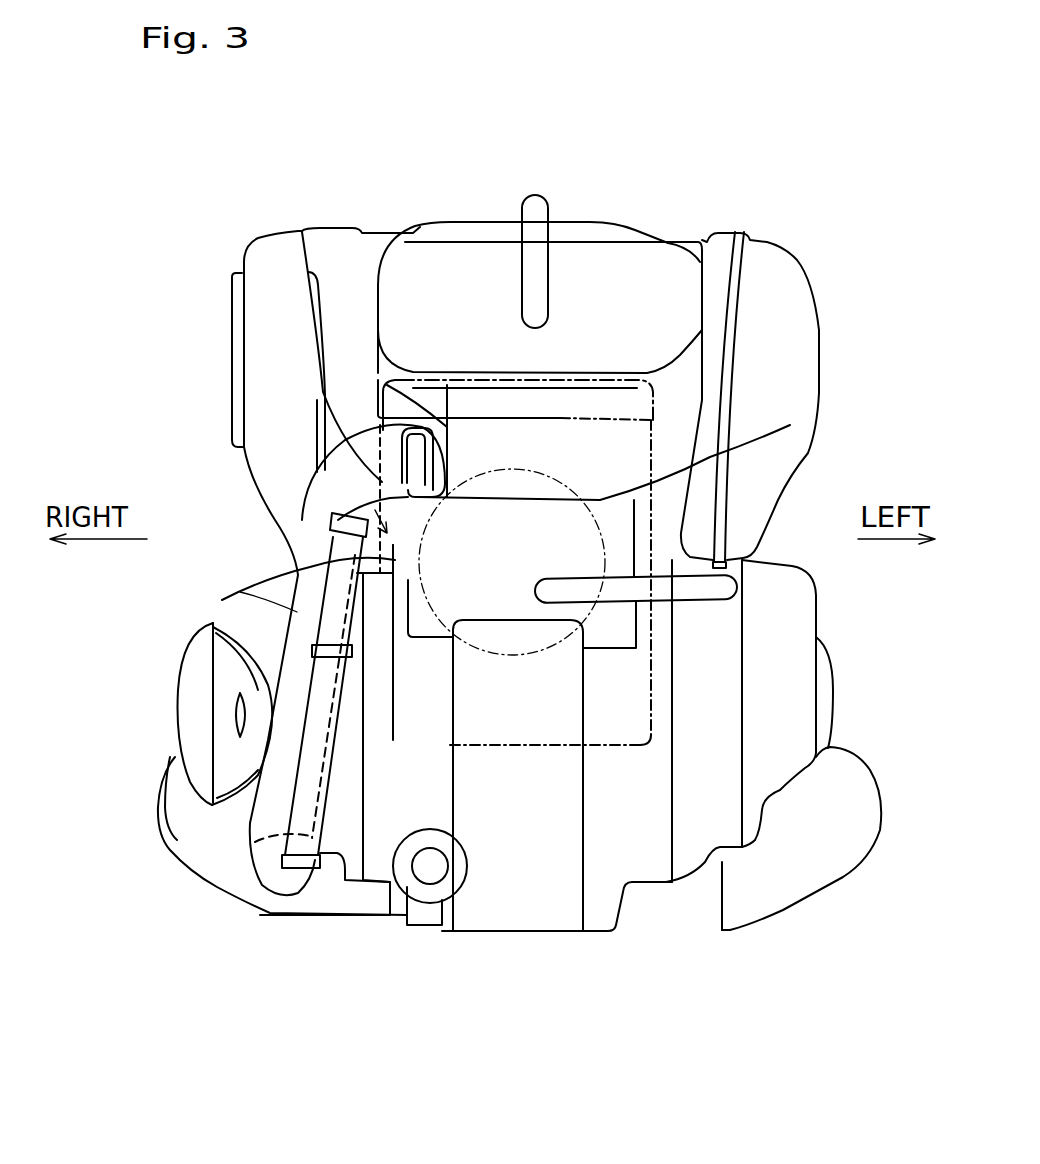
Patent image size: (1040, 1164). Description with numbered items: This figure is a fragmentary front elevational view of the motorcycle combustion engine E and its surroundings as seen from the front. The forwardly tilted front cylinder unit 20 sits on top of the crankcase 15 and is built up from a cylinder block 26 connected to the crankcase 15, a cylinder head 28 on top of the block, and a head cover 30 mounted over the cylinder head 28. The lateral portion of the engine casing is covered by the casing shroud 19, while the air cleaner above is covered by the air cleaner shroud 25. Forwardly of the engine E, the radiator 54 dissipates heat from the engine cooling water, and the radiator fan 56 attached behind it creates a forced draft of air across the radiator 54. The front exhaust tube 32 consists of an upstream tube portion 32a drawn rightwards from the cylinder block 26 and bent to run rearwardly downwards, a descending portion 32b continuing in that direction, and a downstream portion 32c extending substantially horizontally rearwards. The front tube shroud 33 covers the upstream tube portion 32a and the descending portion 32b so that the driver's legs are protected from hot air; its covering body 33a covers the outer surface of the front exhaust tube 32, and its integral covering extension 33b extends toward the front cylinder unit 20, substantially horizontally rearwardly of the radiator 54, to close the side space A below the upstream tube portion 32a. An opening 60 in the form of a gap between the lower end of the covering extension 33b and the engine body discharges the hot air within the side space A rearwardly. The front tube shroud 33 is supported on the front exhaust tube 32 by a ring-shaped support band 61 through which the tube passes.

The motorcycle combustion engine E is at (680, 240).
The crankcase 15 is at (546, 895).
The casing shroud 19 is at (220, 708).
The front cylinder unit 20 is at (882, 314).
The air cleaner shroud 25 is at (260, 313).
The cylinder block 26 is at (660, 520).
The cylinder head 28 is at (660, 447).
The head cover 30 is at (665, 338).
The front exhaust tube 32 is at (337, 810).
The upstream tube portion 32a is at (385, 432).
The descending portion 32b is at (323, 680).
The downstream portion 32c is at (235, 883).
The front tube shroud 33 is at (240, 592).
The covering body 33a is at (297, 630).
The covering extension 33b is at (335, 512).
The radiator 54 is at (650, 692).
The radiator fan 56 is at (607, 560).
The opening 60 is at (373, 570).
The support band 61 is at (293, 883).
The side space A is at (368, 485).